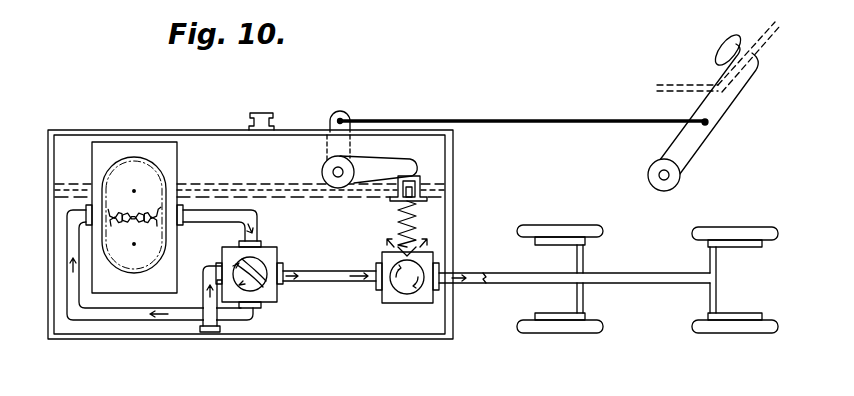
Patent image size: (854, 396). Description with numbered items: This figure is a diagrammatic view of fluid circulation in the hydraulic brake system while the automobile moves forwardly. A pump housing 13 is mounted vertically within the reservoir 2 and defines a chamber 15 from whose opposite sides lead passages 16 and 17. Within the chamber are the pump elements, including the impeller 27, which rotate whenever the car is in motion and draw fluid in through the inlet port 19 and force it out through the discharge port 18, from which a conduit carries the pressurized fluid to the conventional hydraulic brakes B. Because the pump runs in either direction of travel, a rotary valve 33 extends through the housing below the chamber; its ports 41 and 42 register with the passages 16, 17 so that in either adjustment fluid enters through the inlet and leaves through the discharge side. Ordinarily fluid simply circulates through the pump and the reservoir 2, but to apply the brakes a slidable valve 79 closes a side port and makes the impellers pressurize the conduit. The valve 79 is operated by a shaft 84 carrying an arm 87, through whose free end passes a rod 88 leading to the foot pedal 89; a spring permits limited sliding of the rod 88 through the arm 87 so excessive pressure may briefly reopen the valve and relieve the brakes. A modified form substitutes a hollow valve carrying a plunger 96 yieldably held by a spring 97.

The tank 2 is at (52, 245).
The pump housing 13 is at (178, 165).
The chamber 15 is at (108, 178).
The passage 16 is at (70, 299).
The passage 17 is at (214, 216).
The inlet port 19 is at (204, 293).
The rotary valve 33 is at (228, 259).
The port 41 is at (238, 292).
The port 42 is at (259, 268).
The discharge port 18 is at (322, 284).
The spring 97 is at (415, 226).
The plunger 96 is at (421, 184).
The valve 79 is at (417, 190).
The shaft 84 is at (336, 171).
The arm 87 is at (332, 124).
The rod 88 is at (500, 120).
The foot pedal 89 is at (722, 105).
The impeller 27 is at (483, 285).
The hydraulic brakes B is at (586, 243).